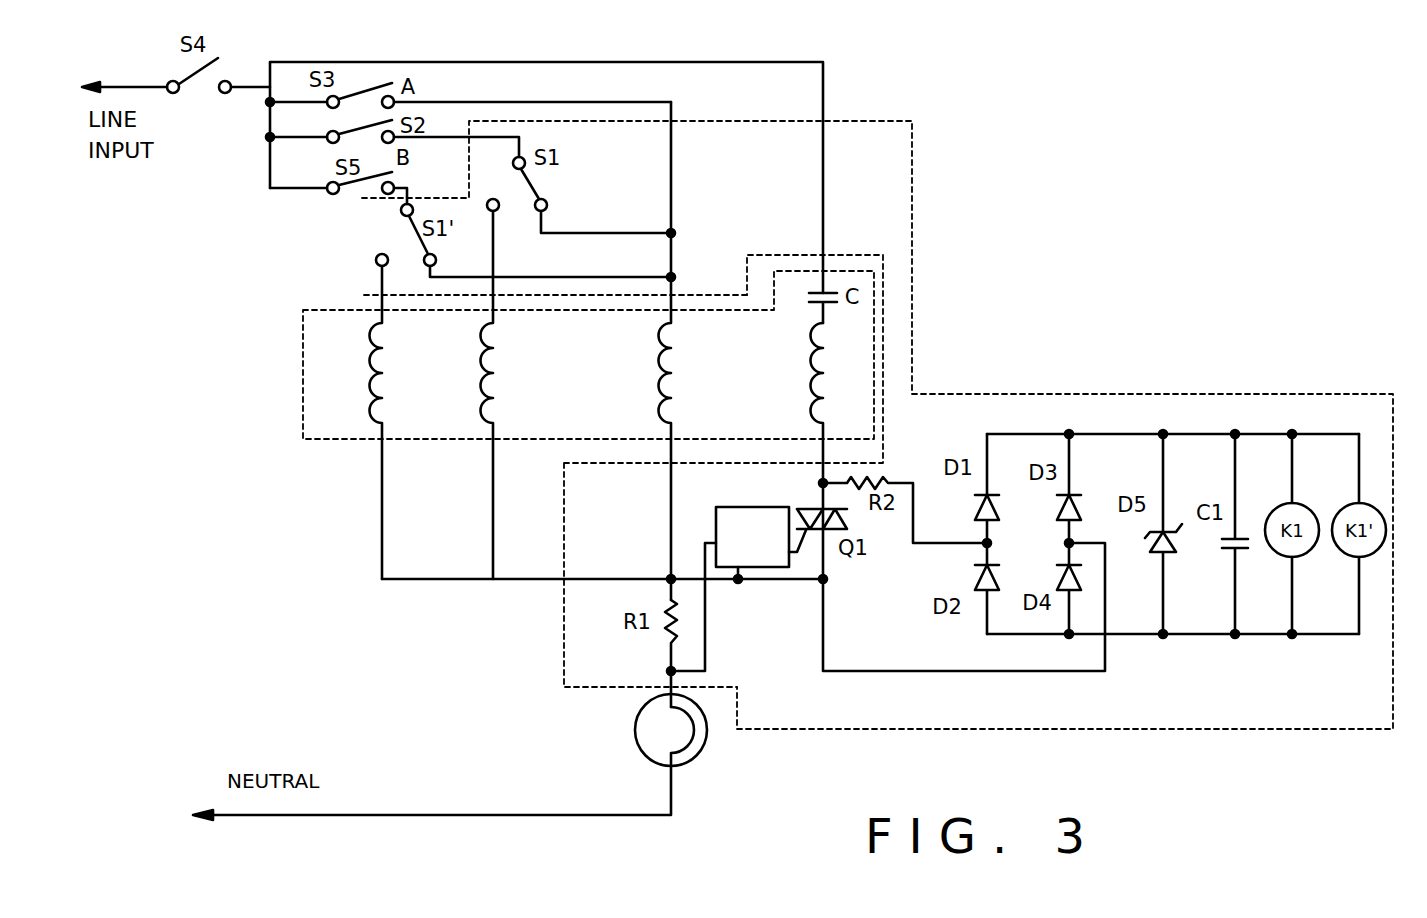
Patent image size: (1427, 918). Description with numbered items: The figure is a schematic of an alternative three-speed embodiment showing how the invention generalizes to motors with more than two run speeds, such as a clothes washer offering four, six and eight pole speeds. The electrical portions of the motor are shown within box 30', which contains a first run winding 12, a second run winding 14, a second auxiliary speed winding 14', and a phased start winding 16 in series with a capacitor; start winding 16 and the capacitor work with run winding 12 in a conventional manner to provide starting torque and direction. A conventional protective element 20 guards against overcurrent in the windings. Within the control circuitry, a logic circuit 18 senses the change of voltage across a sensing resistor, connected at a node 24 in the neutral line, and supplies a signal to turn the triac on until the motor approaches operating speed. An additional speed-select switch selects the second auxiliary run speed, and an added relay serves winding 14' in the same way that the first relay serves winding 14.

The first run winding 12 is at (639, 351).
The second run winding 14 is at (467, 389).
The second auxiliary speed winding 14' is at (356, 416).
The start winding 16 is at (937, 497).
The logic circuit 18 is at (758, 566).
The protective element 20 is at (635, 727).
The common node 24 is at (668, 573).
The motor circuitry box 30' is at (553, 355).